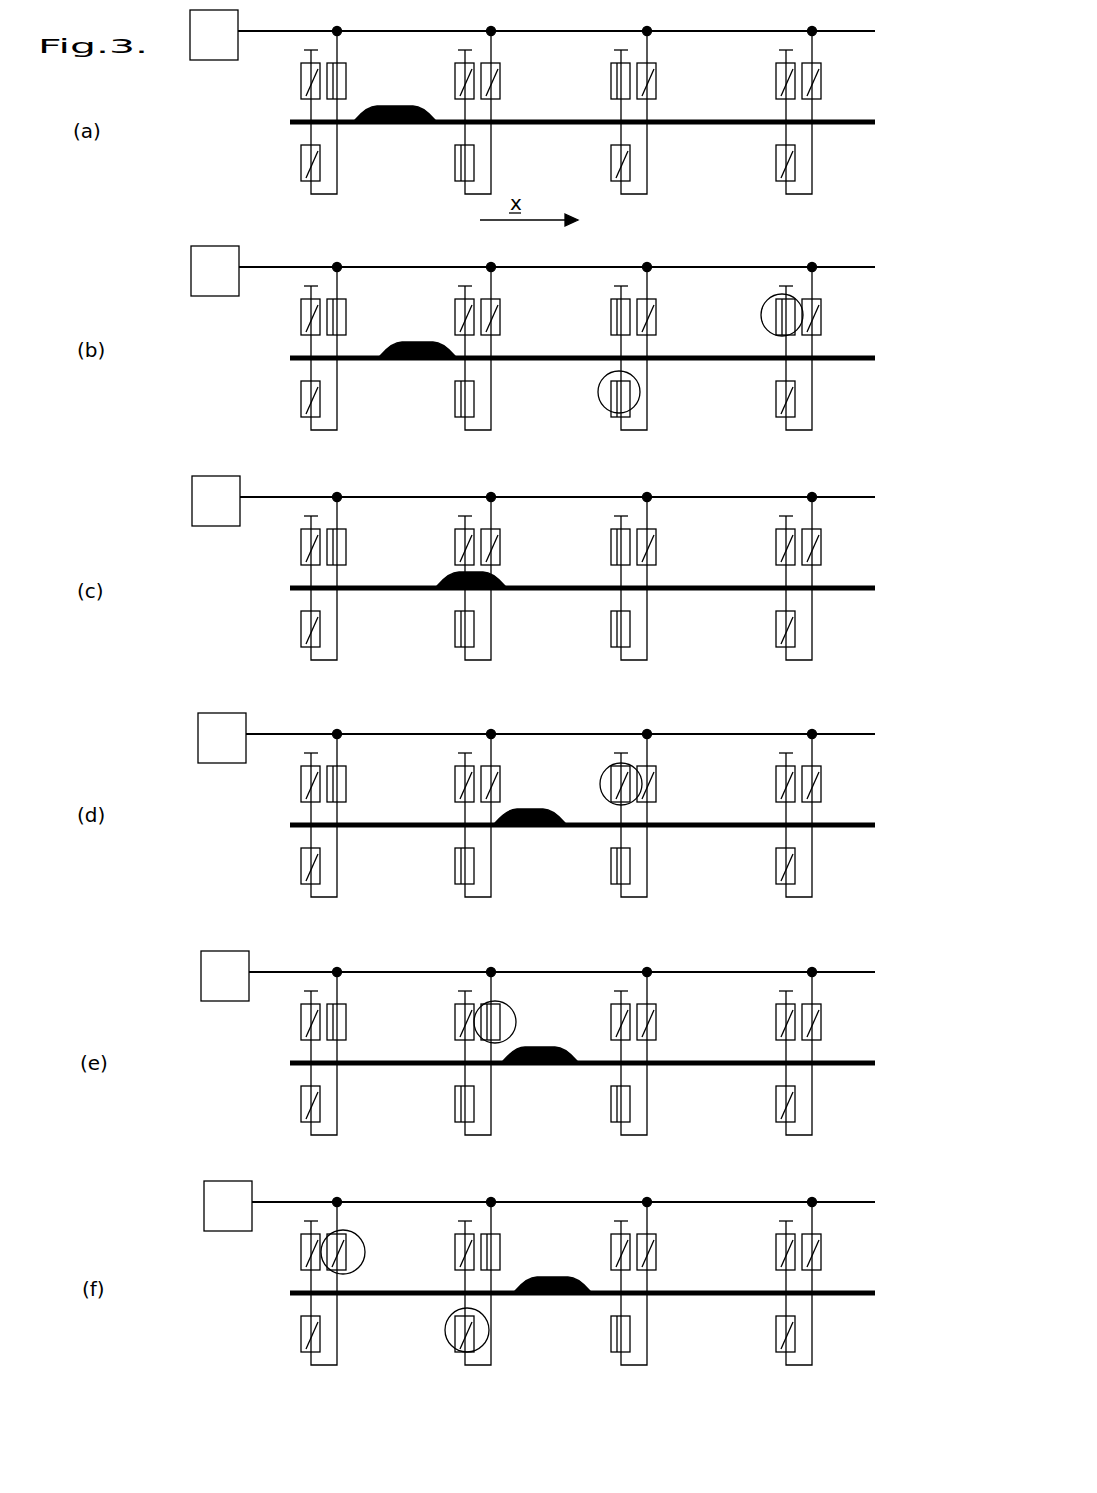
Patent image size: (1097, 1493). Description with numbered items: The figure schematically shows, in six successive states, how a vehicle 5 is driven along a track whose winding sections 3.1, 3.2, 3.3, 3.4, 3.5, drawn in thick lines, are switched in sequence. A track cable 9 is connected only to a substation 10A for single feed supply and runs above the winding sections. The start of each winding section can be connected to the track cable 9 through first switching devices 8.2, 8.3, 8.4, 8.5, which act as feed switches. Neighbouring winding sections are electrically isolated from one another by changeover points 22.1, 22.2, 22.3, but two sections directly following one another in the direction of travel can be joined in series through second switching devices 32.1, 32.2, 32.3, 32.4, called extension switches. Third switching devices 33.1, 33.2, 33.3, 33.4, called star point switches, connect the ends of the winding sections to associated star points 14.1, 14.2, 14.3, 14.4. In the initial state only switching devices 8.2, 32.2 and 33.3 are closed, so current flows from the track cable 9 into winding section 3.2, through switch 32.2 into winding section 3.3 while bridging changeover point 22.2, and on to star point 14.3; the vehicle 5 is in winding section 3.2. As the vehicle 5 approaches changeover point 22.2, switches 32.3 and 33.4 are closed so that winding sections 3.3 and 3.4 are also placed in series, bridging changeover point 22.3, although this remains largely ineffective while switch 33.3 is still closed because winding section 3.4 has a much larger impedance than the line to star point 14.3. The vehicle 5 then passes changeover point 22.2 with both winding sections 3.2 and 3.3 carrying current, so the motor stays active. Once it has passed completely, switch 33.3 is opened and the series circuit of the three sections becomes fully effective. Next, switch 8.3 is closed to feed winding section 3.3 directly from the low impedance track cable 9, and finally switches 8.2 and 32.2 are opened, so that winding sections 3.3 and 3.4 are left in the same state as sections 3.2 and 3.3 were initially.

The substation 10A is at (207, 48).
The track cable 9 is at (240, 50).
The star point 14.1 is at (305, 50).
The star point 14.2 is at (459, 50).
The star point 14.3 is at (615, 50).
The star point 14.4 is at (781, 50).
The first switching device 8.2 is at (343, 88).
The first switching device 8.3 is at (502, 85).
The first switching device 8.4 is at (660, 84).
The first switching device 8.5 is at (818, 80).
The third switching device 33.1 is at (302, 82).
The third switching device 33.2 is at (457, 97).
The third switching device 33.3 is at (612, 73).
The third switching device 33.4 is at (776, 73).
The second switching device 32.1 is at (302, 160).
The second switching device 32.2 is at (453, 160).
The second switching device 32.3 is at (610, 157).
The second switching device 32.4 is at (776, 160).
The changeover point 22.1 is at (323, 123).
The changeover point 22.2 is at (478, 123).
The changeover point 22.3 is at (642, 355).
The winding section 3.1 is at (290, 123).
The winding section 3.2 is at (437, 125).
The winding section 3.3 is at (578, 123).
The winding section 3.4 is at (744, 125).
The winding section 3.5 is at (860, 125).
The vehicle 5 is at (400, 107).